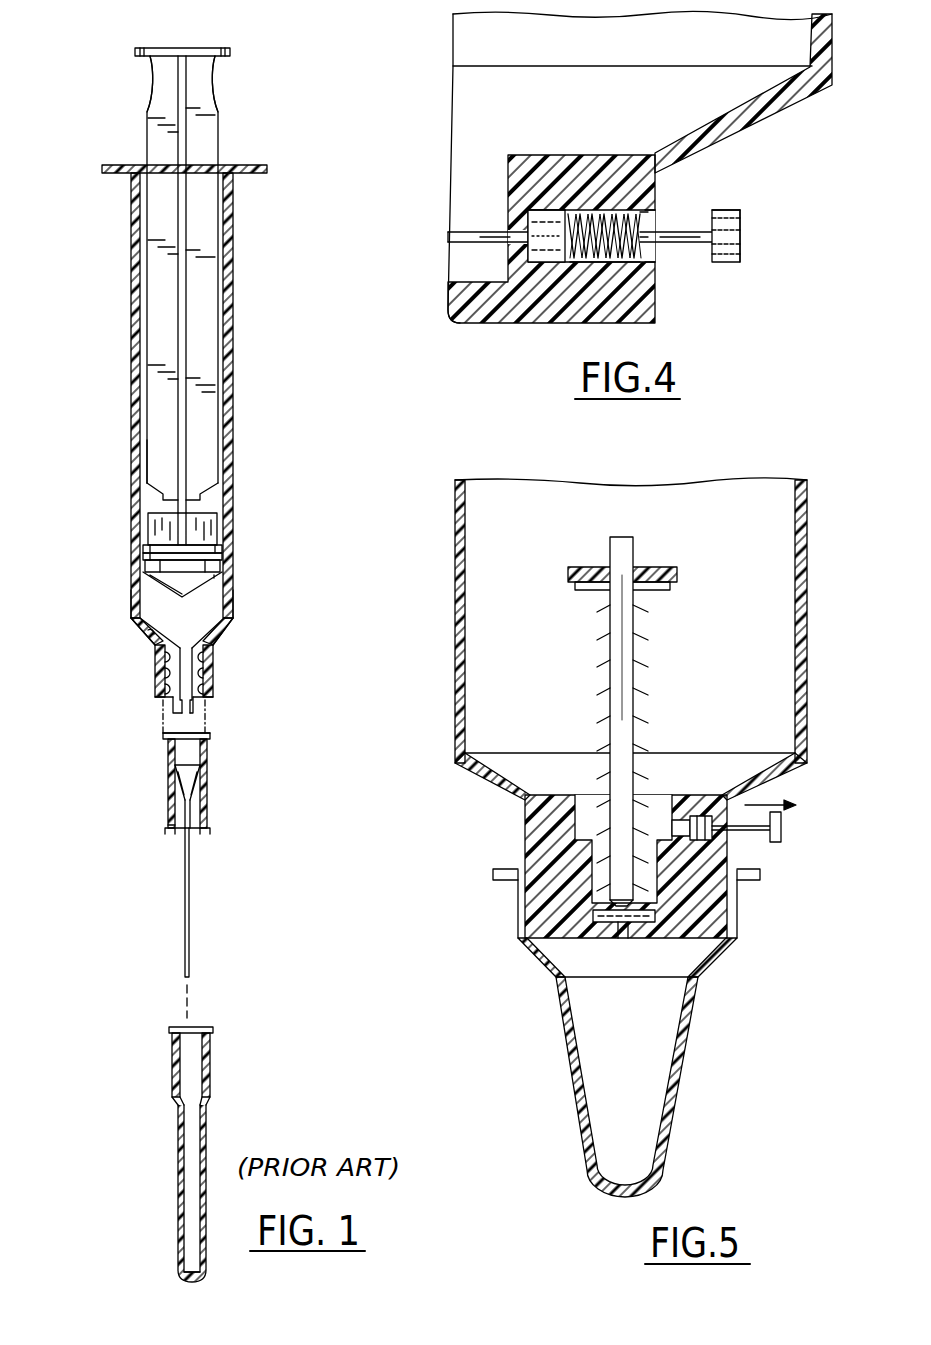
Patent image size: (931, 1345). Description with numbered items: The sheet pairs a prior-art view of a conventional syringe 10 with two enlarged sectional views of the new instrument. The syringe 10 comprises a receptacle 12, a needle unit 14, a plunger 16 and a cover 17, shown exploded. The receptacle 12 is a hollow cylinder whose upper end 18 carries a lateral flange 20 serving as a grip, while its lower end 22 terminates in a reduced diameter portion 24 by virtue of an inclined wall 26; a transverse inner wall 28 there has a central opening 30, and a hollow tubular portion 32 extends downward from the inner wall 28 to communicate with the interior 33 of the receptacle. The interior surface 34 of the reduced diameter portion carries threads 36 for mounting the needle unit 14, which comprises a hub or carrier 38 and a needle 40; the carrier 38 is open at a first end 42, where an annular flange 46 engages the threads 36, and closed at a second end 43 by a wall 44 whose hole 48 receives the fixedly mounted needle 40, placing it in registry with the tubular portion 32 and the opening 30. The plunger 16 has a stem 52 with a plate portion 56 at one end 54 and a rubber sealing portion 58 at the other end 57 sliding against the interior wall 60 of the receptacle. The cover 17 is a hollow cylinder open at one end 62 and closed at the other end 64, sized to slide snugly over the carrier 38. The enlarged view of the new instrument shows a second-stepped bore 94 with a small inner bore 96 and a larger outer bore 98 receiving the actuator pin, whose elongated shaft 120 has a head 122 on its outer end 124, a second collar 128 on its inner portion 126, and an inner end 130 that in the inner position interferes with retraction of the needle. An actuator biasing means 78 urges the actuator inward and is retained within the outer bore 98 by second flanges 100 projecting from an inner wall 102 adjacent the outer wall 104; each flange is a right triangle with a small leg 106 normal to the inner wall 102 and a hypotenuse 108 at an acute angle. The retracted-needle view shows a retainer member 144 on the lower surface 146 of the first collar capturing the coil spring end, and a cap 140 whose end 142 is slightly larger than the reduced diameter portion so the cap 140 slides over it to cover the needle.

In FIG. 1, the syringe 10 is at (266, 373).
In FIG. 1, the receptacle 12 is at (233, 311).
In FIG. 1, the needle unit 14 is at (212, 778).
In FIG. 1, the plunger 16 is at (220, 84).
In FIG. 1, the cover 17 is at (176, 1166).
In FIG. 1, the upper end 18 is at (233, 222).
In FIG. 1, the lateral flange 20 is at (125, 165).
In FIG. 1, the lower end 22 is at (233, 608).
In FIG. 1, the reduced diameter portion 24 is at (213, 660).
In FIG. 1, the inclined wall 26 is at (135, 637).
In FIG. 1, the transverse inner wall 28 is at (150, 636).
In FIG. 1, the central opening 30 is at (222, 640).
In FIG. 1, the hollow tubular portion 32 is at (195, 710).
In FIG. 1, the interior 33 is at (225, 487).
In FIG. 1, the interior surface 34 is at (165, 687).
In FIG. 1, the threads 36 is at (200, 686).
In FIG. 1, the hub or carrier 38 is at (172, 790).
In FIG. 1, the needle 40 is at (183, 916).
In FIG. 1, the first end 42 is at (205, 735).
In FIG. 1, the second end 43 is at (165, 834).
In FIG. 1, the wall 44 is at (205, 826).
In FIG. 1, the annular flange 46 is at (165, 737).
In FIG. 1, the hole 48 is at (182, 832).
In FIG. 1, the stem 52 is at (205, 361).
In FIG. 1, the one end 54 is at (150, 78).
In FIG. 1, the plate portion 56 is at (167, 47).
In FIG. 1, the other end 57 is at (205, 506).
In FIG. 1, the rubber sealing portion 58 is at (135, 569).
In FIG. 1, the interior wall 60 is at (142, 487).
In FIG. 1, the open end 62 is at (178, 1025).
In FIG. 1, the closed end 64 is at (182, 1283).
In FIG. 4, the actuator biasing means 78 is at (515, 322).
In FIG. 4, the second-stepped bore 94 is at (585, 215).
In FIG. 4, the inner bore 96 is at (500, 232).
In FIG. 4, the outer bore 98 is at (634, 212).
In FIG. 4, the second flanges 100 is at (657, 180).
In FIG. 4, the inner wall 102 is at (585, 315).
In FIG. 4, the outer wall 104 is at (657, 305).
In FIG. 4, the small leg 106 is at (665, 213).
In FIG. 4, the hypotenuse 108 is at (650, 217).
In FIG. 4, the elongated shaft 120 is at (700, 250).
In FIG. 4, the head 122 is at (742, 248).
In FIG. 4, the outer end 124 is at (714, 240).
In FIG. 4, the inner portion 126 is at (450, 222).
In FIG. 4, the second collar 128 is at (542, 212).
In FIG. 4, the inner end 130 is at (452, 238).
In FIG. 5, the cap 140 is at (585, 1102).
In FIG. 5, the end 142 is at (525, 916).
In FIG. 5, the retainer member 144 is at (590, 590).
In FIG. 5, the lower surface 146 is at (662, 588).